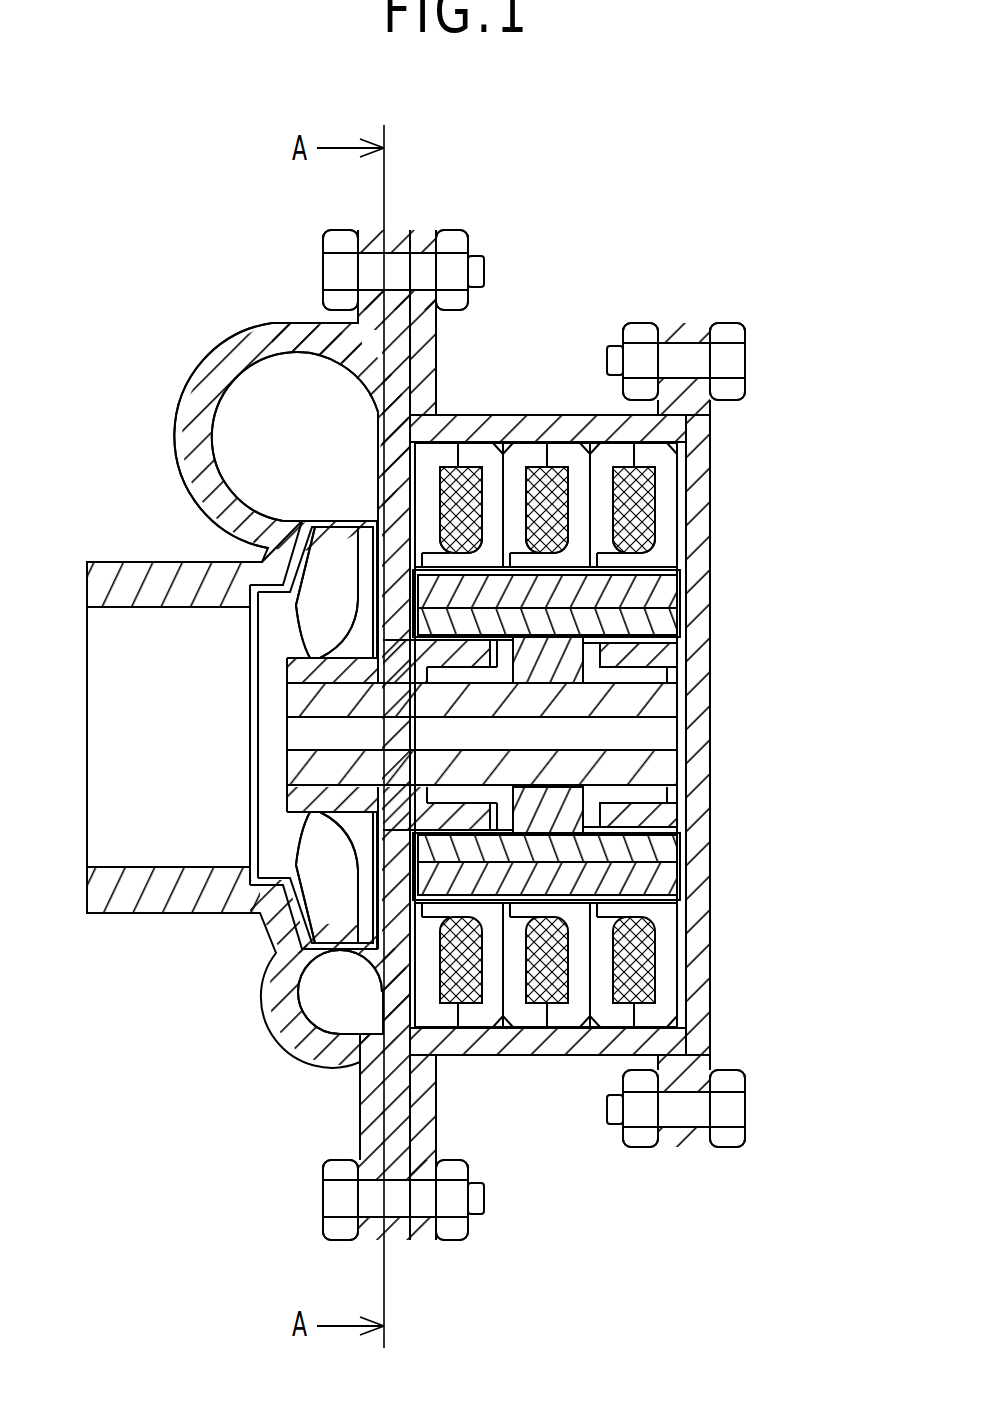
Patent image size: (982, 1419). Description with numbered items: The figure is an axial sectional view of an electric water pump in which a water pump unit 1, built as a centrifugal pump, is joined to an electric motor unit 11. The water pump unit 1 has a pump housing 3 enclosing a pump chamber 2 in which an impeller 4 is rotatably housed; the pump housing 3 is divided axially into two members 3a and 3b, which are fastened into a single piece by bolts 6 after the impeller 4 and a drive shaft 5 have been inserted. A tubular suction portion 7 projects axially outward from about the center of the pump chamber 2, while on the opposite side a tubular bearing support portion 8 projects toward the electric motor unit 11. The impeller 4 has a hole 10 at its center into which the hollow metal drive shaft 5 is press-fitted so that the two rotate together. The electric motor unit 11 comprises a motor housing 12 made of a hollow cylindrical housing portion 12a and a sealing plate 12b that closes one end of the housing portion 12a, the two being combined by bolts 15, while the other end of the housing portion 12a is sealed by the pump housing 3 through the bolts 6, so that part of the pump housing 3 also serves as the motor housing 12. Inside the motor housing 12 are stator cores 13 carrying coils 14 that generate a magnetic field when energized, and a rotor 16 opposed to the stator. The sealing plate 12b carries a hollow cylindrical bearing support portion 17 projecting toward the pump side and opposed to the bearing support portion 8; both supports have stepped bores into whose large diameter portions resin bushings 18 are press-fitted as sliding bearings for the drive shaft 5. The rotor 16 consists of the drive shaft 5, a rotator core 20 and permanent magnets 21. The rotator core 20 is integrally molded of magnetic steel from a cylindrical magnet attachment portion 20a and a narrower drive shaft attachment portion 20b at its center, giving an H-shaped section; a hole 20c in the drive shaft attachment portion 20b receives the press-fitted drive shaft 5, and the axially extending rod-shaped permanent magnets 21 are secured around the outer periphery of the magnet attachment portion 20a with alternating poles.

The water pump unit 1 is at (183, 329).
The pump chamber 2 is at (273, 1022).
The pump housing 3 is at (172, 479).
The pump housing member 3a is at (190, 415).
The pump housing member 3b is at (383, 375).
The impeller 4 is at (267, 923).
The drive shaft 5 is at (297, 768).
The bolts 6 is at (330, 272).
The tubular suction portion 7 is at (95, 586).
The tubular bearing support portion 8 is at (475, 815).
The hole 10 is at (298, 700).
The electric motor unit 11 is at (592, 394).
The motor housing 12 is at (726, 498).
The housing portion 12a is at (537, 427).
The sealing plate 12b is at (700, 1002).
The stator cores 13 is at (665, 516).
The coils 14 is at (653, 493).
The bolts 15 is at (735, 357).
The rotor 16 is at (696, 619).
The bearing support portion 17 is at (637, 657).
The resin bushings 18 is at (622, 675).
The rotator core 20 is at (542, 849).
The magnet attachment portion 20a is at (637, 848).
The drive shaft attachment portion 20b is at (620, 795).
The hole 20c is at (583, 762).
The permanent magnets 21 is at (640, 877).